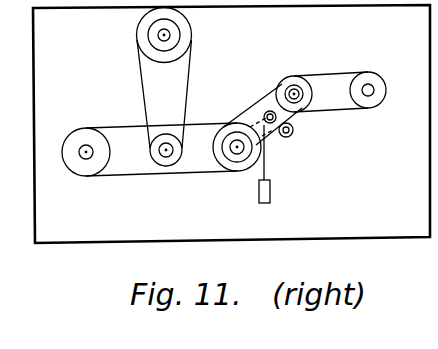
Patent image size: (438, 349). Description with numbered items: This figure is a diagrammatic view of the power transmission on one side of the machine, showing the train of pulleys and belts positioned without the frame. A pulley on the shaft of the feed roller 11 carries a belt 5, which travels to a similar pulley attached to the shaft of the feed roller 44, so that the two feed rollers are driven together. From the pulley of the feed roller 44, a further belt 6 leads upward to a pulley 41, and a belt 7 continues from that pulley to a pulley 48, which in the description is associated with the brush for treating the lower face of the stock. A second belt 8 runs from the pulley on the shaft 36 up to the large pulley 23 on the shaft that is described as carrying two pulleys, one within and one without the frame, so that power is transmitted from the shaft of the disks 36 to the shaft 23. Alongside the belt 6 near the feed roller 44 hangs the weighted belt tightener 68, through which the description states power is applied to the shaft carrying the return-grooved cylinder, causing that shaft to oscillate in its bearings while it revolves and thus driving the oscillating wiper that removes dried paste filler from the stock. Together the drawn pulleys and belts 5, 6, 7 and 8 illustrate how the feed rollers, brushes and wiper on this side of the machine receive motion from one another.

The belt 5 is at (122, 128).
The belt 6 is at (262, 115).
The belt 7 is at (330, 75).
The belt 8 is at (192, 80).
The feed roller 11 is at (86, 156).
The shaft 23 is at (171, 35).
The disks 36 is at (166, 156).
The pulley 41 is at (300, 106).
The feed roller 44 is at (241, 156).
The brush 48 is at (372, 104).
The belt tightener 68 is at (266, 166).